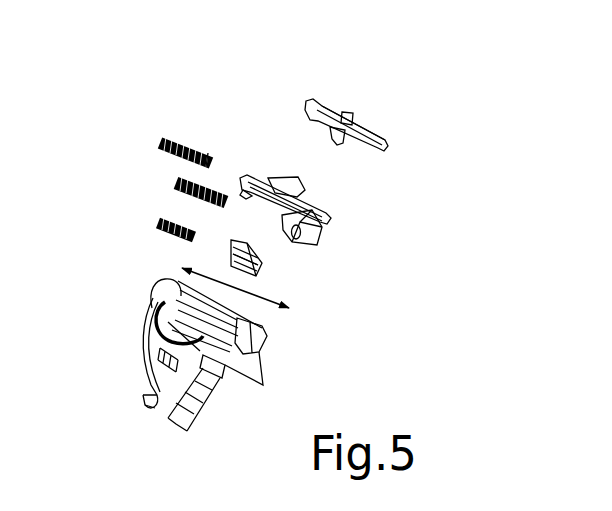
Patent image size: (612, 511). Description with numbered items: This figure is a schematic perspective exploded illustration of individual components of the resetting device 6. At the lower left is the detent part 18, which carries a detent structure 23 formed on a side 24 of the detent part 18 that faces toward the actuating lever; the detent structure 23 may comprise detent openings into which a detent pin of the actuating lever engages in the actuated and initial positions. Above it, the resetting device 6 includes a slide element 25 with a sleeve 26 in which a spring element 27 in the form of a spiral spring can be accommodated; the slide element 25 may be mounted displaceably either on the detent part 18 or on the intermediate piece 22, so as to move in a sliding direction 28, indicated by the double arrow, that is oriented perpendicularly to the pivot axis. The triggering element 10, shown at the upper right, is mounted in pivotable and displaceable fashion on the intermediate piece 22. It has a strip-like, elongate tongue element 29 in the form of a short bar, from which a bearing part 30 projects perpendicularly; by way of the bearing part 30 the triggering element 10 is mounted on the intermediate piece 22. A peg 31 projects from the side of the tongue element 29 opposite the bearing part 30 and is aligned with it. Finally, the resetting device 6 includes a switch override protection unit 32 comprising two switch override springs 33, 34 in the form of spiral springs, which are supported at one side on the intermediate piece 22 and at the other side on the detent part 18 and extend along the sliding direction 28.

The resetting device 6 is at (105, 76).
The triggering element 10 is at (388, 127).
The detent part 18 is at (235, 373).
The intermediate piece 22 is at (315, 198).
The detent structure 23 is at (140, 347).
The side 24 is at (150, 383).
The slide element 25 is at (262, 255).
The sleeve 26 is at (230, 251).
The spring element 27 is at (152, 223).
The sliding direction 28 is at (253, 297).
The tongue element 29 is at (365, 121).
The bearing part 30 is at (331, 137).
The peg 31 is at (349, 110).
The switch override protection unit 32 is at (178, 126).
The switch override spring 33 is at (198, 152).
The switch override spring 34 is at (172, 185).